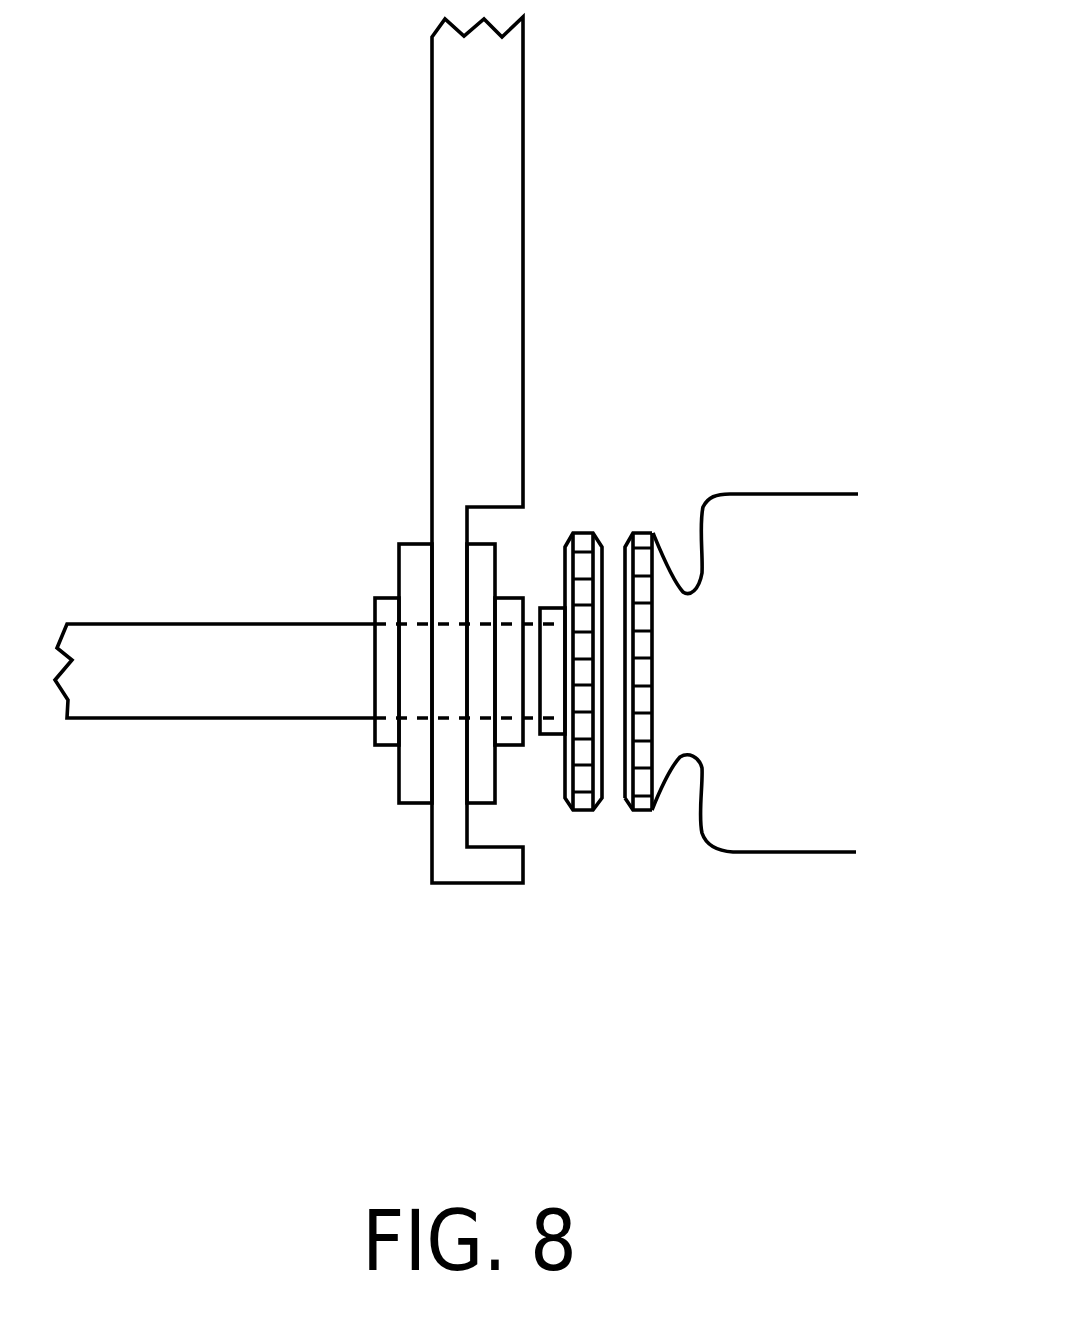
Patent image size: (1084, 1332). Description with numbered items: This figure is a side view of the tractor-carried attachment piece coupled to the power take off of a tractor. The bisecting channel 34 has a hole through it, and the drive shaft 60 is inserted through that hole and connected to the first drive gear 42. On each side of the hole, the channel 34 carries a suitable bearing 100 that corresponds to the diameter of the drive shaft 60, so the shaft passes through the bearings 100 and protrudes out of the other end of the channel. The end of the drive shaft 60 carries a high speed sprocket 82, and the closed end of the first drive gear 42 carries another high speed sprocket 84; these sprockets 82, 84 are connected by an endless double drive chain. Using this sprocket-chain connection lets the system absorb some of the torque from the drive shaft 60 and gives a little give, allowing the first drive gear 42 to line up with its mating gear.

The bisecting channel 34 is at (537, 455).
The drive shaft 60 is at (242, 728).
The bearing 100 is at (393, 787).
The high speed sprocket 82 is at (587, 818).
The high speed sprocket 84 is at (640, 820).
The first drive gear 42 is at (817, 862).